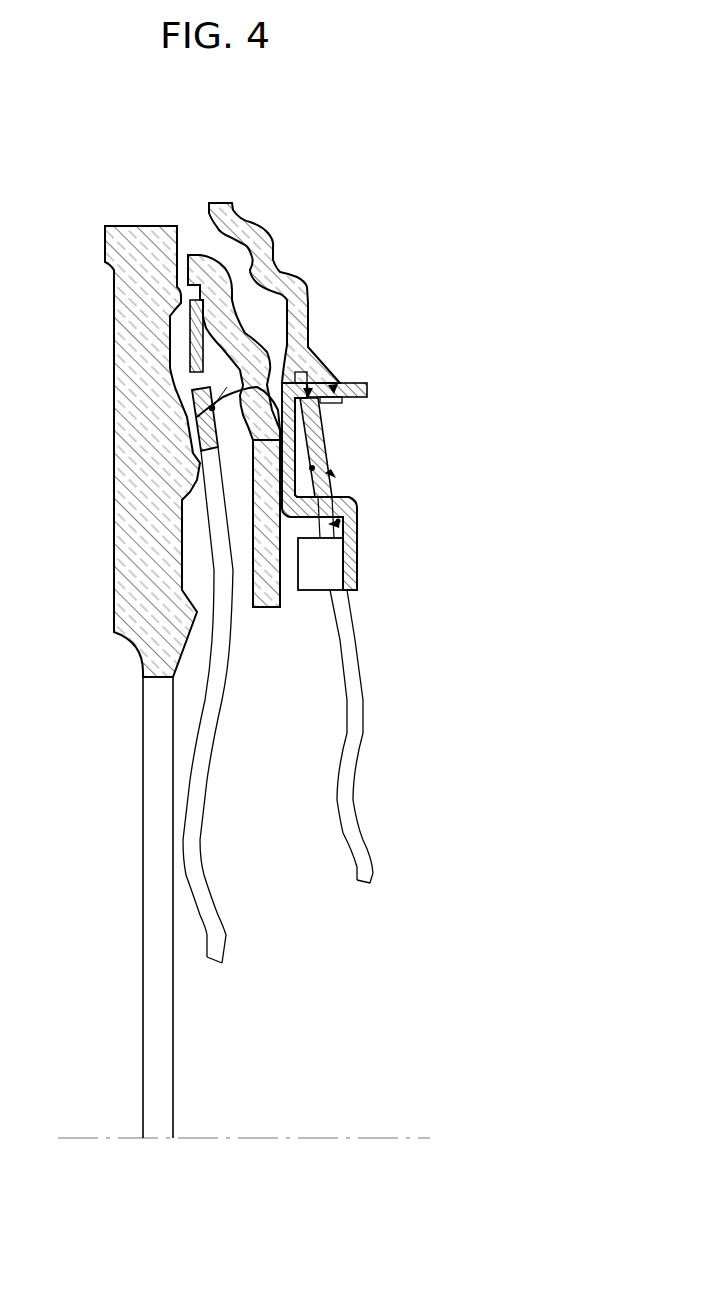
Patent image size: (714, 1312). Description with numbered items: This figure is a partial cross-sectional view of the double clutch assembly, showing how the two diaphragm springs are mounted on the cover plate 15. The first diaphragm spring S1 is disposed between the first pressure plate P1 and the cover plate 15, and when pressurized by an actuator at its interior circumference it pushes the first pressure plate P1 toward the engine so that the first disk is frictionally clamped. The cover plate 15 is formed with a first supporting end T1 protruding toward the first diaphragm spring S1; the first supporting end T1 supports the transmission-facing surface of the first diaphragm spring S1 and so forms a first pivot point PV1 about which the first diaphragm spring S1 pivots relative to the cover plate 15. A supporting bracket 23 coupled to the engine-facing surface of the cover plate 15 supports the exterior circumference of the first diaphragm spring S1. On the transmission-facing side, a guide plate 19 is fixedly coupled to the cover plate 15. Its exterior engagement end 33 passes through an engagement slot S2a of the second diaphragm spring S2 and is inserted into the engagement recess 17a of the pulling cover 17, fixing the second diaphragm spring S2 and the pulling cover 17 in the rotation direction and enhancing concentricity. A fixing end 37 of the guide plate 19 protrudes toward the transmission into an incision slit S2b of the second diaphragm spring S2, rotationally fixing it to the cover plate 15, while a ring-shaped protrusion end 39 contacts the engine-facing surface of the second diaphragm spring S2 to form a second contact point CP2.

The cover plate 15 is at (217, 277).
The pulling cover 17 is at (297, 288).
The engagement recess 17a is at (335, 400).
The guide plate 19 is at (310, 505).
The supporting bracket 23 is at (197, 340).
The exterior engagement end 33 is at (357, 391).
The fixing end 37 is at (327, 560).
The protrusion end 39 is at (300, 463).
The first pressure plate P1 is at (128, 518).
The first pivot point PV1 is at (207, 410).
The first supporting end T1 is at (207, 453).
The first diaphragm spring S1 is at (208, 748).
The second diaphragm spring S2 is at (355, 710).
The engagement slot S2a is at (308, 388).
The incision slit S2b is at (340, 523).
The second contact point CP2 is at (331, 475).